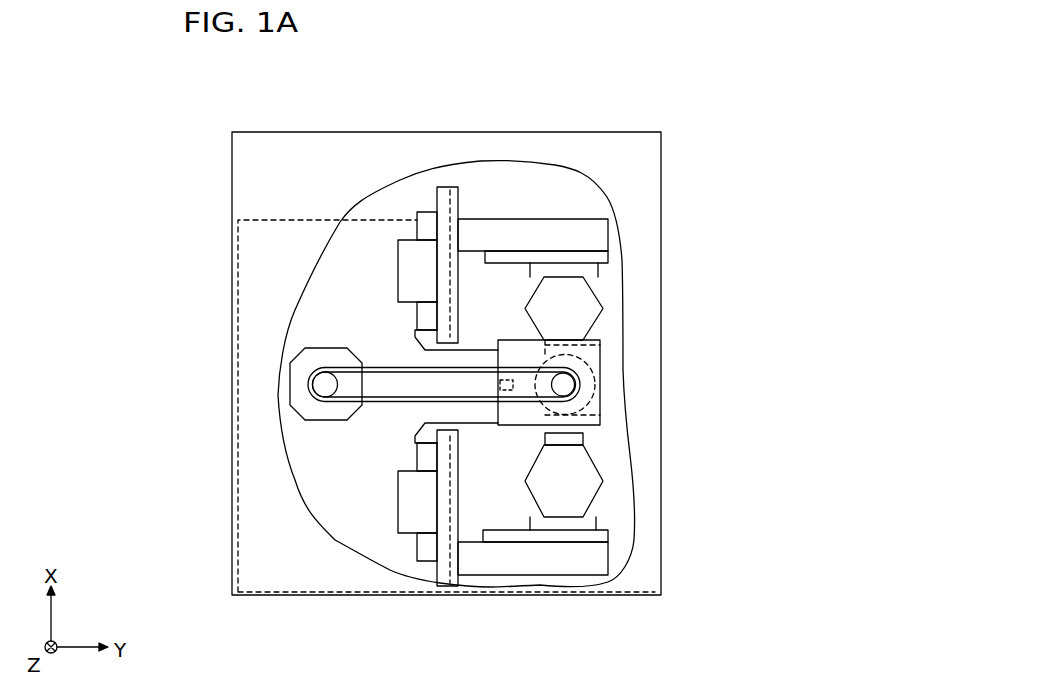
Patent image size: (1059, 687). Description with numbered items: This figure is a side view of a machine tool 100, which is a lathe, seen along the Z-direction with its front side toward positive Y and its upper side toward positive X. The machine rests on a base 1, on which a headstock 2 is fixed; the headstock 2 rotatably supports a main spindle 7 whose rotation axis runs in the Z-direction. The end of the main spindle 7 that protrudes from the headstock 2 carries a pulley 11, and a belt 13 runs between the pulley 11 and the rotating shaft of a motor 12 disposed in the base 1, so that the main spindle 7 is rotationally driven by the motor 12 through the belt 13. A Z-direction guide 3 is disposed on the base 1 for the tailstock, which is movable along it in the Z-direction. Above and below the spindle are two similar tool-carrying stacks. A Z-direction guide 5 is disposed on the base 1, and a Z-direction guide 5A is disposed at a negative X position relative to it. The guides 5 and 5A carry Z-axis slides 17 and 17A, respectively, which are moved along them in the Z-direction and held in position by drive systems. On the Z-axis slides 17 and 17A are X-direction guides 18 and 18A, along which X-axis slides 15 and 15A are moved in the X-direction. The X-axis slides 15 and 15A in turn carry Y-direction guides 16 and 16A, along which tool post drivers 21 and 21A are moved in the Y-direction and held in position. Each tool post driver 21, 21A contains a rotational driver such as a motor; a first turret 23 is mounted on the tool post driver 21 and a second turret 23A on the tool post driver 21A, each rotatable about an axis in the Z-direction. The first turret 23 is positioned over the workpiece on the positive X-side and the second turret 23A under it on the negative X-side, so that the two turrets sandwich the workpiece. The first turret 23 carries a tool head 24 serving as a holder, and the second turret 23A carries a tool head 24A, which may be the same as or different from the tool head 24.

The machine tool 100 is at (727, 103).
The base 1 is at (365, 235).
The headstock 2 is at (598, 410).
The Z-direction guide 3 is at (503, 397).
The Z-direction guide 5 is at (411, 251).
The Z-direction guide 5A is at (410, 513).
The main spindle 7 is at (598, 430).
The pulley 11 is at (568, 385).
The motor 12 is at (291, 398).
The belt 13 is at (383, 400).
The X-axis slide 15 is at (582, 225).
The X-axis slide 15A is at (600, 565).
The Y-direction guide 16 is at (516, 251).
The Y-direction guide 16A is at (518, 542).
The Z-axis slide 17 is at (443, 187).
The Z-axis slide 17A is at (443, 565).
The X-direction guide 18 is at (450, 192).
The X-direction guide 18A is at (452, 560).
The tool post driver 21 is at (592, 272).
The tool post driver 21A is at (597, 535).
The first turret 23 is at (583, 295).
The second turret 23A is at (586, 508).
The tool head 24 is at (595, 355).
The tool head 24A is at (590, 435).